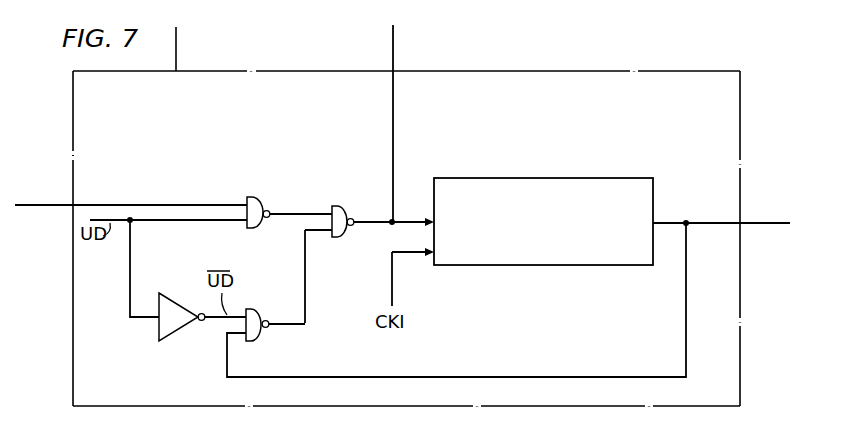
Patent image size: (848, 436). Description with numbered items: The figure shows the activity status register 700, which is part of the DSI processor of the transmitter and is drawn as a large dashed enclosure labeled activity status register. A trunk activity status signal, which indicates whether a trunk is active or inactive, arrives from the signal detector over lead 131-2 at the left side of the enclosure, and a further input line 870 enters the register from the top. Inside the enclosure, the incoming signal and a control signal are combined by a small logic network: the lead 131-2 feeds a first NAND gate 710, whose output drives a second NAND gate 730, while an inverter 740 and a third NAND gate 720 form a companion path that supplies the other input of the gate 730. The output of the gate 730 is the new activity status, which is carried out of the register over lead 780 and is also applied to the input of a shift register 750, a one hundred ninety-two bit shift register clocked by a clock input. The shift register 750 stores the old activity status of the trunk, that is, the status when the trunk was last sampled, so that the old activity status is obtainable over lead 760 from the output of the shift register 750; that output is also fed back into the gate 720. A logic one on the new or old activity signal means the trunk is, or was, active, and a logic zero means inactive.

The activity status register 700 is at (576, 70).
The input line 870 is at (177, 52).
The lead 780 is at (394, 55).
The lead 131-2 is at (44, 204).
The NAND gate 710 is at (258, 199).
The NAND gate 730 is at (342, 207).
The shift register 750 is at (603, 177).
The lead 760 is at (756, 222).
The inverter 740 is at (180, 324).
The NAND gate 720 is at (258, 337).